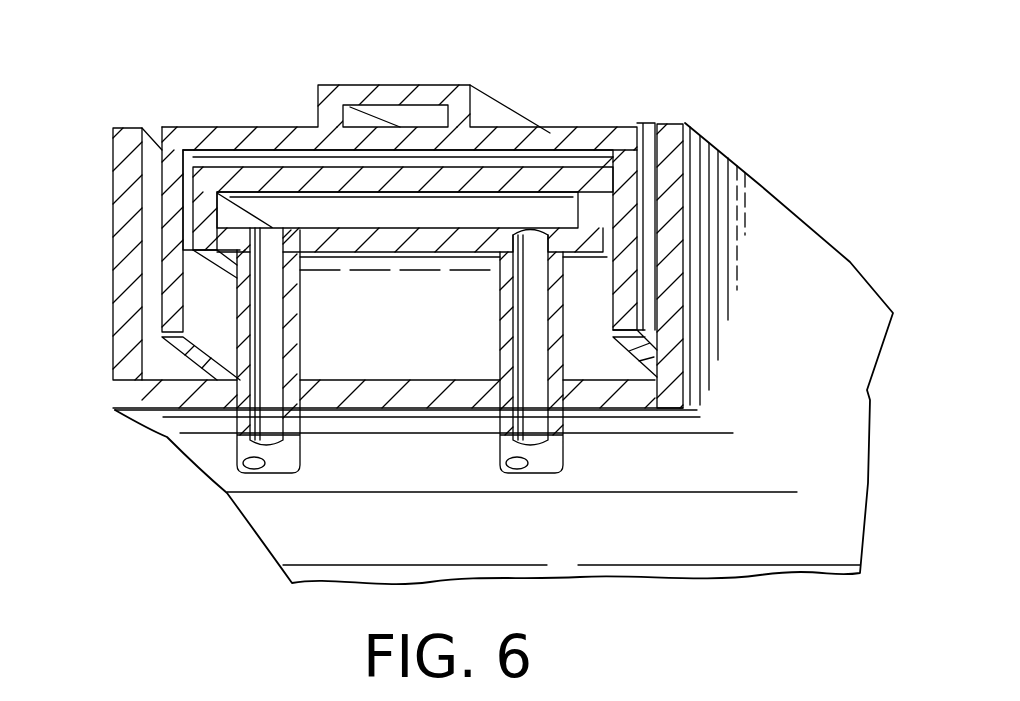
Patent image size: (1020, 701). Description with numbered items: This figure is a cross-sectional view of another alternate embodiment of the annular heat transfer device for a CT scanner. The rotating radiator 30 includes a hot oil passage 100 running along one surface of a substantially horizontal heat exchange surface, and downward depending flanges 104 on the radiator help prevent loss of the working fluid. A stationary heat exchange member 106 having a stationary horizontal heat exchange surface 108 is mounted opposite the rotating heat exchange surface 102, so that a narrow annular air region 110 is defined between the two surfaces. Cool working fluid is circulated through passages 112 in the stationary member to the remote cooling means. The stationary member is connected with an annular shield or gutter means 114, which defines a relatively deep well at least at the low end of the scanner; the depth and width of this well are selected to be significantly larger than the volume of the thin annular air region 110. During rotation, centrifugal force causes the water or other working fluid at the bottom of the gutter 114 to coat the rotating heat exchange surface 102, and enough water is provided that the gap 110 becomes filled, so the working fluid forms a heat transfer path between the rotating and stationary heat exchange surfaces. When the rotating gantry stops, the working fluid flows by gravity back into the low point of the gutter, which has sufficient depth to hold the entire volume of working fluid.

The rotating radiator 30 is at (572, 135).
The hot oil passage 100 is at (397, 112).
The rotating heat exchange surface 102 is at (237, 157).
The downward depending flanges 104 is at (172, 250).
The stationary heat exchange member 106 is at (600, 233).
The stationary horizontal heat exchange surface 108 is at (640, 123).
The annular air region 110 is at (490, 160).
The passages 112 is at (410, 219).
The annular shield or gutter means 114 is at (673, 313).